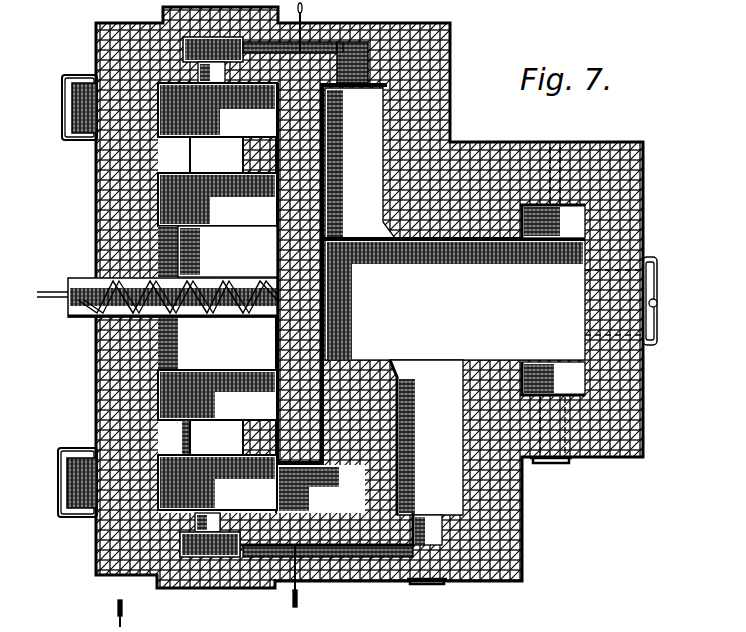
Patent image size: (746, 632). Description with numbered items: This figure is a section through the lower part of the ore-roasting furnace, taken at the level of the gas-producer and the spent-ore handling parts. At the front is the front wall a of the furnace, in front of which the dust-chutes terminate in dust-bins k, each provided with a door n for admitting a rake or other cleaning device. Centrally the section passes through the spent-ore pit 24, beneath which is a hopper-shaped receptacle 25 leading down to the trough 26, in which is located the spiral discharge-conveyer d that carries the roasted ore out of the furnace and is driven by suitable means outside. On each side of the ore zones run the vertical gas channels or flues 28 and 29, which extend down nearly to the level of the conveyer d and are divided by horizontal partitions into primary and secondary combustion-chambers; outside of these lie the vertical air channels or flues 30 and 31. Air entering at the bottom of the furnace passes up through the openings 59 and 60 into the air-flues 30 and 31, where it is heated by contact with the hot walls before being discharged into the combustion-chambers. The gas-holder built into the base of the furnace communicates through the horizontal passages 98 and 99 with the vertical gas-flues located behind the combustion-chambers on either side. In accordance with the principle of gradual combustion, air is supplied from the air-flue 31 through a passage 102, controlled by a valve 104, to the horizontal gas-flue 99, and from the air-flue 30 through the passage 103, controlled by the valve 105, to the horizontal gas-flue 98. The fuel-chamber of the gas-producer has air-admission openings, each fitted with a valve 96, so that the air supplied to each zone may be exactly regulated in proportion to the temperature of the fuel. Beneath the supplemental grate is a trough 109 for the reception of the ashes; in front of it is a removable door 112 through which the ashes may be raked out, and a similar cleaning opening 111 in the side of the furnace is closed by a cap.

The vertical air channel or flue 30 is at (185, 38).
The valve 105 is at (305, 40).
The opening closed by a cap 111 is at (352, 48).
The passage 103 is at (372, 33).
The horizontal gas-flue 98 is at (357, 161).
The trough 109 is at (452, 300).
The horizontal gas-flue 99 is at (426, 453).
The passage 102 is at (372, 553).
The valve 104 is at (283, 577).
The removable door 112 is at (428, 572).
The valve 96 is at (655, 303).
The vertical gas channel or flue 28 is at (217, 110).
The opening 59 is at (216, 155).
The spent-ore pit 24 is at (160, 200).
The hopper-shaped receptacle 25 is at (227, 251).
The front wall of the furnace a is at (97, 352).
The trough 26 is at (190, 303).
The spiral discharge-conveyer d is at (252, 305).
The opening 60 is at (212, 437).
The vertical gas channel or flue 29 is at (217, 482).
The vertical air channel or flue 31 is at (215, 548).
The dust-bin k is at (82, 78).
The door n is at (68, 105).